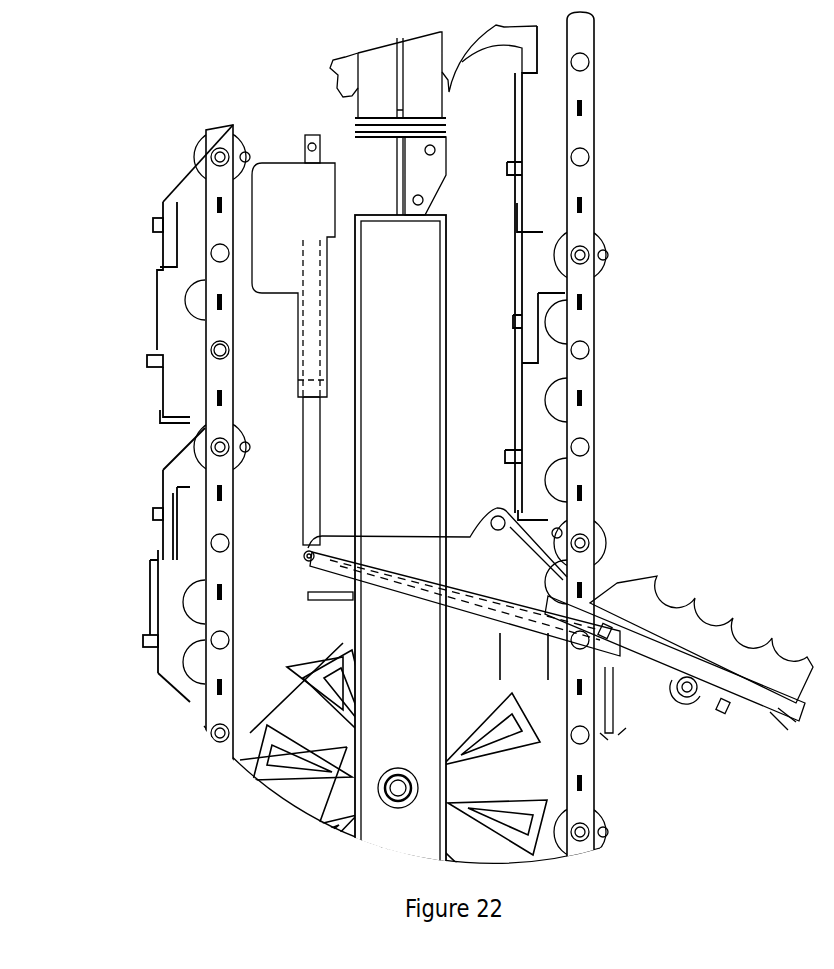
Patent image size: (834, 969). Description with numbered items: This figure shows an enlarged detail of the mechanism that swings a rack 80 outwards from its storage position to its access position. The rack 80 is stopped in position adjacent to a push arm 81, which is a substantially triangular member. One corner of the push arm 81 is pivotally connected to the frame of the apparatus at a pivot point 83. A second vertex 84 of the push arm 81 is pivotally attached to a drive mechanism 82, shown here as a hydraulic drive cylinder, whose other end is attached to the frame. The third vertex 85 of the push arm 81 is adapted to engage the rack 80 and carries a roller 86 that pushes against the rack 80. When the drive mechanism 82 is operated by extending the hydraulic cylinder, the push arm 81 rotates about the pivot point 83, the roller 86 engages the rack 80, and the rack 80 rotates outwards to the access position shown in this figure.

The rack 80 is at (725, 600).
The push arm 81 is at (470, 567).
The drive mechanism 82 is at (312, 348).
The pivot point 83 is at (503, 513).
The second vertex 84 is at (305, 557).
The third vertex 85 is at (695, 700).
The roller 86 is at (685, 708).